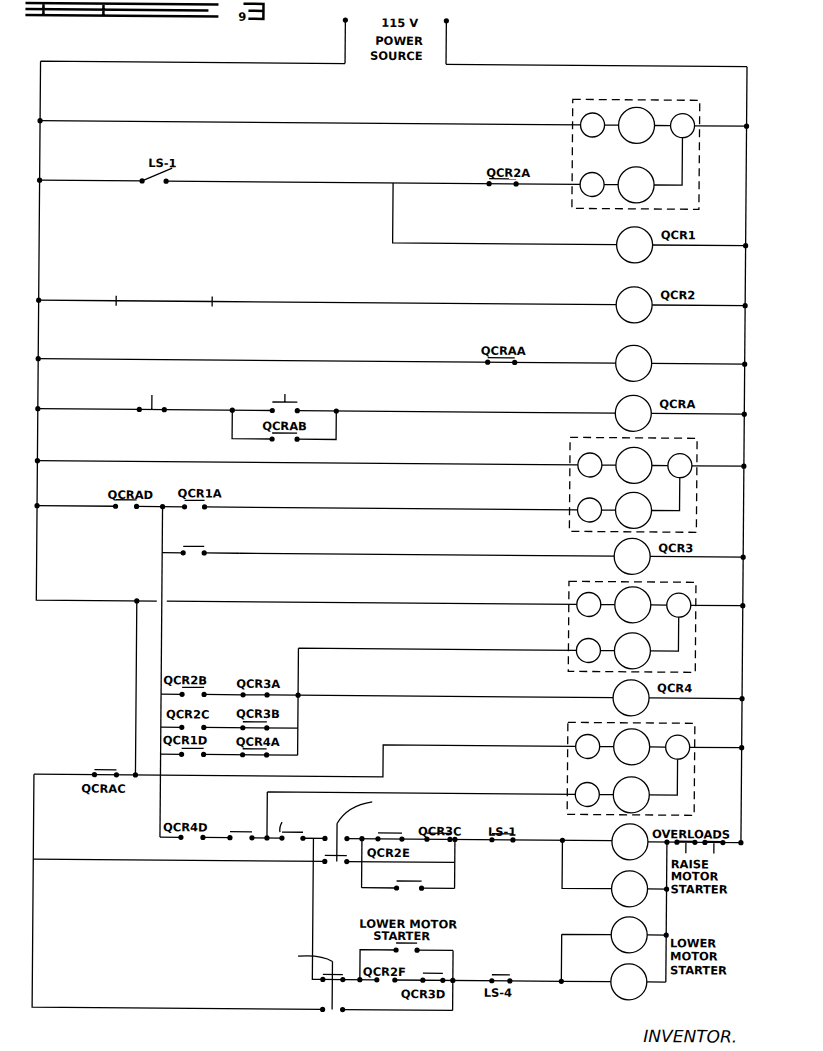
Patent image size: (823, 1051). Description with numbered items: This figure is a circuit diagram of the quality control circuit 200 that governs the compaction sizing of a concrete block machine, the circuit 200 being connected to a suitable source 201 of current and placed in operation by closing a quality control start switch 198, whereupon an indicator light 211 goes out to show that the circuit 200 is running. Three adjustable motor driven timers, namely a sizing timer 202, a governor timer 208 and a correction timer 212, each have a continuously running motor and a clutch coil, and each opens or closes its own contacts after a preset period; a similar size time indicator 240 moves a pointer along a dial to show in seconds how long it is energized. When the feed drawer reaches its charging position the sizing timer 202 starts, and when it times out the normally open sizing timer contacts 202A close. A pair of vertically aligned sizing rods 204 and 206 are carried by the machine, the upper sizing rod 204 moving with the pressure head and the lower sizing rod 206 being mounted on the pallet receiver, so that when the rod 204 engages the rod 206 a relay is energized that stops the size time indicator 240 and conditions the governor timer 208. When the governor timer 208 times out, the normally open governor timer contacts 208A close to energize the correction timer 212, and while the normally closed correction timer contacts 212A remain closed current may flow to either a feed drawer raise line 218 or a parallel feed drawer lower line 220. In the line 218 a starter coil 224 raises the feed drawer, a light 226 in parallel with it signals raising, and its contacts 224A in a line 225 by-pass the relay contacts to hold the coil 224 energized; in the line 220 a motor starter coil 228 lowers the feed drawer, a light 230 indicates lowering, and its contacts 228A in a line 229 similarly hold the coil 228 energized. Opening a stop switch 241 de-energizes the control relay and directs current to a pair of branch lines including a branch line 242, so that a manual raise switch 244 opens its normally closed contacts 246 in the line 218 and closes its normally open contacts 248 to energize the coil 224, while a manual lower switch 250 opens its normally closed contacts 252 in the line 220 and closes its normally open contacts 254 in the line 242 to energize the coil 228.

The quality control start switch 198 is at (291, 403).
The quality control circuit 200 is at (745, 587).
The source of current 201 is at (430, 27).
The sizing timer 202 is at (692, 438).
The sizing timer contacts 202A is at (194, 557).
The sizing rod 204 is at (116, 303).
The sizing rod 206 is at (212, 303).
The governor timer 208 is at (694, 580).
The governor timer contacts 208A is at (244, 841).
The indicator light 211 is at (643, 360).
The correction timer 212 is at (704, 727).
The correction timer contacts 212A is at (284, 842).
The feed drawer raise line 218 is at (305, 842).
The feed drawer lower line 220 is at (314, 918).
The starter coil 224 is at (619, 846).
The contacts 224A is at (420, 880).
The line 225 is at (459, 890).
The light 226 is at (618, 881).
The motor starter coil 228 is at (636, 991).
The contacts 228A is at (407, 949).
The line 229 is at (458, 952).
The light 230 is at (617, 930).
The size time indicator 240 is at (697, 166).
The stop switch 241 is at (152, 412).
The branch line 242 is at (182, 1011).
The manual raise switch 244 is at (325, 831).
The normally closed contacts 246 is at (340, 838).
The normally open contacts 248 is at (387, 874).
The manual lower switch 250 is at (329, 989).
The normally closed contacts 252 is at (342, 984).
The normally open contacts 254 is at (332, 1012).